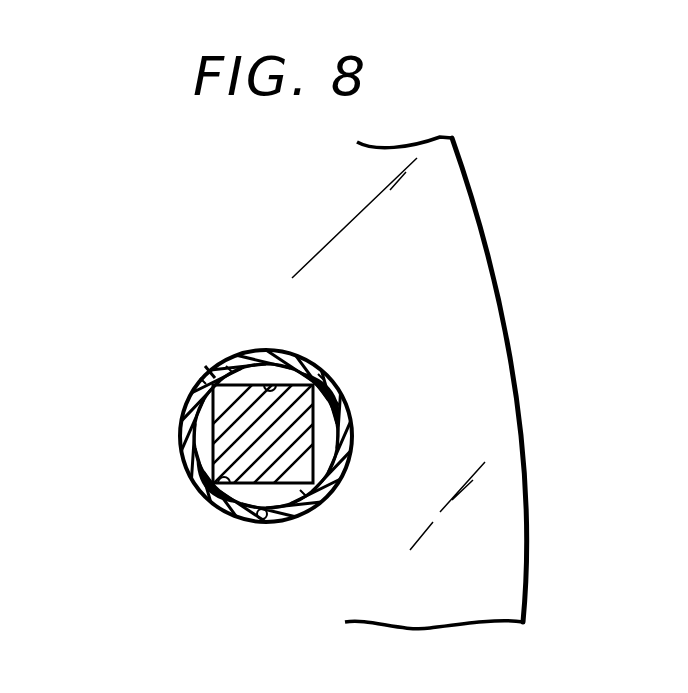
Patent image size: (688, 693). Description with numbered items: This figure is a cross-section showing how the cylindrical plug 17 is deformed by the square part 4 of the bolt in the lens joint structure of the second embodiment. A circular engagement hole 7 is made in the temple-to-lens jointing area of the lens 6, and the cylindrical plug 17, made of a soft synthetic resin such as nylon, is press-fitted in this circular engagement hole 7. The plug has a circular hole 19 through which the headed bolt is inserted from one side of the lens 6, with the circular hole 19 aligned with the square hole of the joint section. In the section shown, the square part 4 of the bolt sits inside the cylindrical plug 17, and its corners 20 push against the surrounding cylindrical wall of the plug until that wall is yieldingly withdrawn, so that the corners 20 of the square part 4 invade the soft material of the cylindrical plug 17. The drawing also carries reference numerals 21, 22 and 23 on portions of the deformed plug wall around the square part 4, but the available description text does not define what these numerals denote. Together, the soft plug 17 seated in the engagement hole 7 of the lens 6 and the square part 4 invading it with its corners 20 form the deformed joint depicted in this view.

The square part 4 is at (297, 447).
The lens 6 is at (452, 192).
The circular engagement hole 7 is at (264, 522).
The cylindrical plug 17 is at (190, 442).
The circular hole 19 is at (270, 378).
The corners 20 is at (202, 380).
The projection 21 is at (210, 493).
The wall portion 22 is at (210, 372).
The slit 23 is at (230, 367).